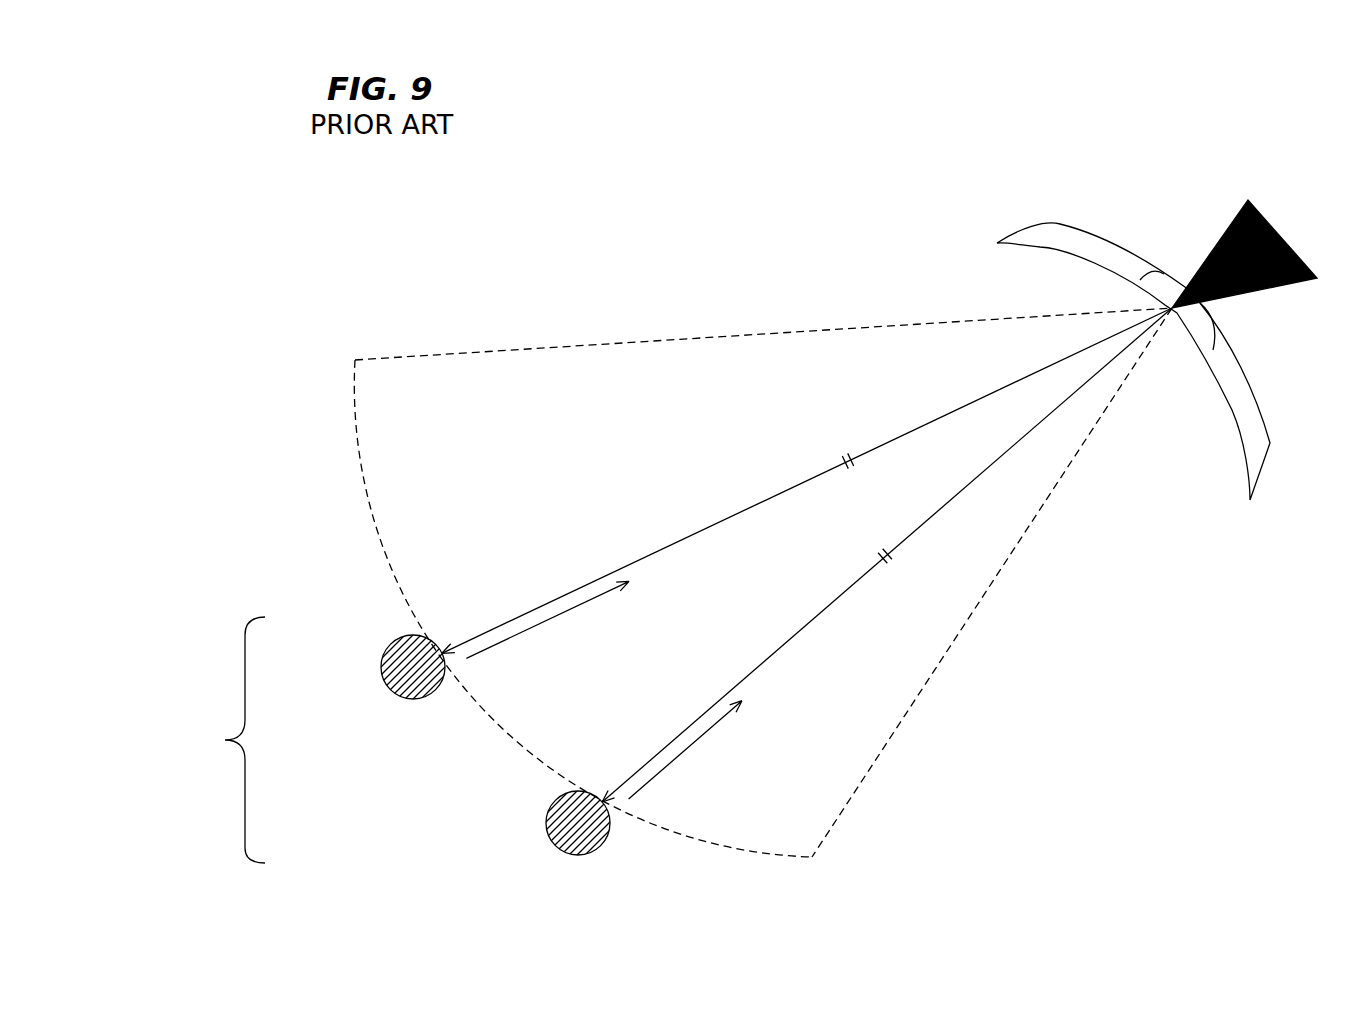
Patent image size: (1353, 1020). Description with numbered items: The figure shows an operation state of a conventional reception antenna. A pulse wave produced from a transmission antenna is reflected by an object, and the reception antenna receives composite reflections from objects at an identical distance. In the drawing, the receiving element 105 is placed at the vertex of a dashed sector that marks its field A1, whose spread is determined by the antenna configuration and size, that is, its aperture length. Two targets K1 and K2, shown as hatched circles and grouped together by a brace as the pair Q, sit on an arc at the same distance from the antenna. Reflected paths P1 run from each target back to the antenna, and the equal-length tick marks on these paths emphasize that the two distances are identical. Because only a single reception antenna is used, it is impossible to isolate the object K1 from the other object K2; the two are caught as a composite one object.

The curved lens 105 is at (1087, 243).
The detection area A1 is at (973, 613).
The light beam P1 is at (667, 547).
The target K1 is at (381, 667).
The target K2 is at (547, 828).
The object group Q is at (240, 723).